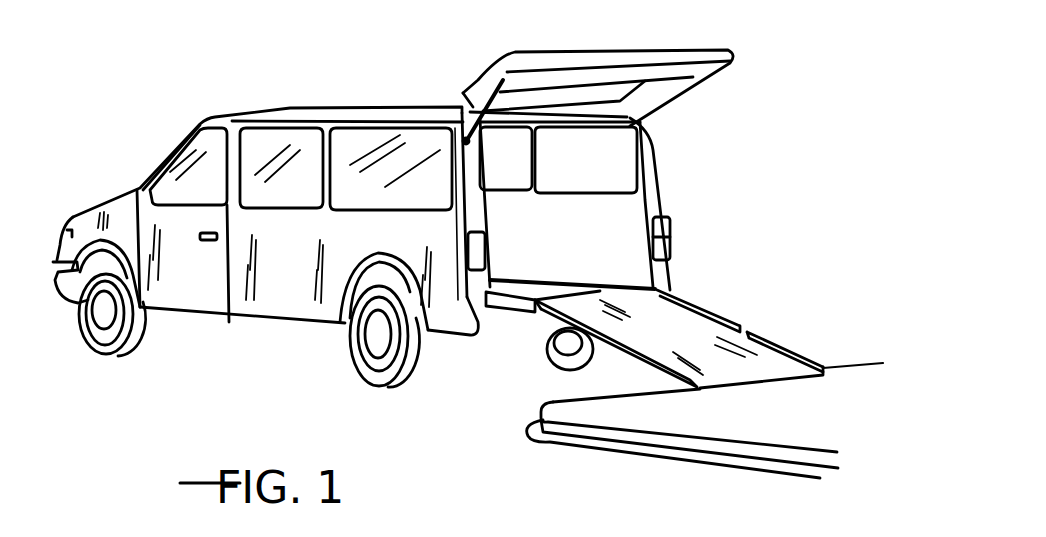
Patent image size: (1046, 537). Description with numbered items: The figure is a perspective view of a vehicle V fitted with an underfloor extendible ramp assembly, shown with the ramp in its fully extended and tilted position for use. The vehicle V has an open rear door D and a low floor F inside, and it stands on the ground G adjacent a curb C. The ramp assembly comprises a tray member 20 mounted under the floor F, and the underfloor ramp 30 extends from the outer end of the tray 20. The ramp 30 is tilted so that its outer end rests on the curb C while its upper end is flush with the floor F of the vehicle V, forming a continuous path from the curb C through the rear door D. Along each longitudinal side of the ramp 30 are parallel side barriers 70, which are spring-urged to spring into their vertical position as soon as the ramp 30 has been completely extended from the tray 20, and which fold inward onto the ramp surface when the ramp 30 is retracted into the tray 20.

The vehicle V is at (326, 106).
The rear door D is at (707, 48).
The floor F is at (516, 285).
The tray member 20 is at (567, 328).
The underfloor ramp 30 is at (676, 340).
The side barrier 70 is at (780, 347).
The curb C is at (703, 445).
The ground G is at (477, 462).